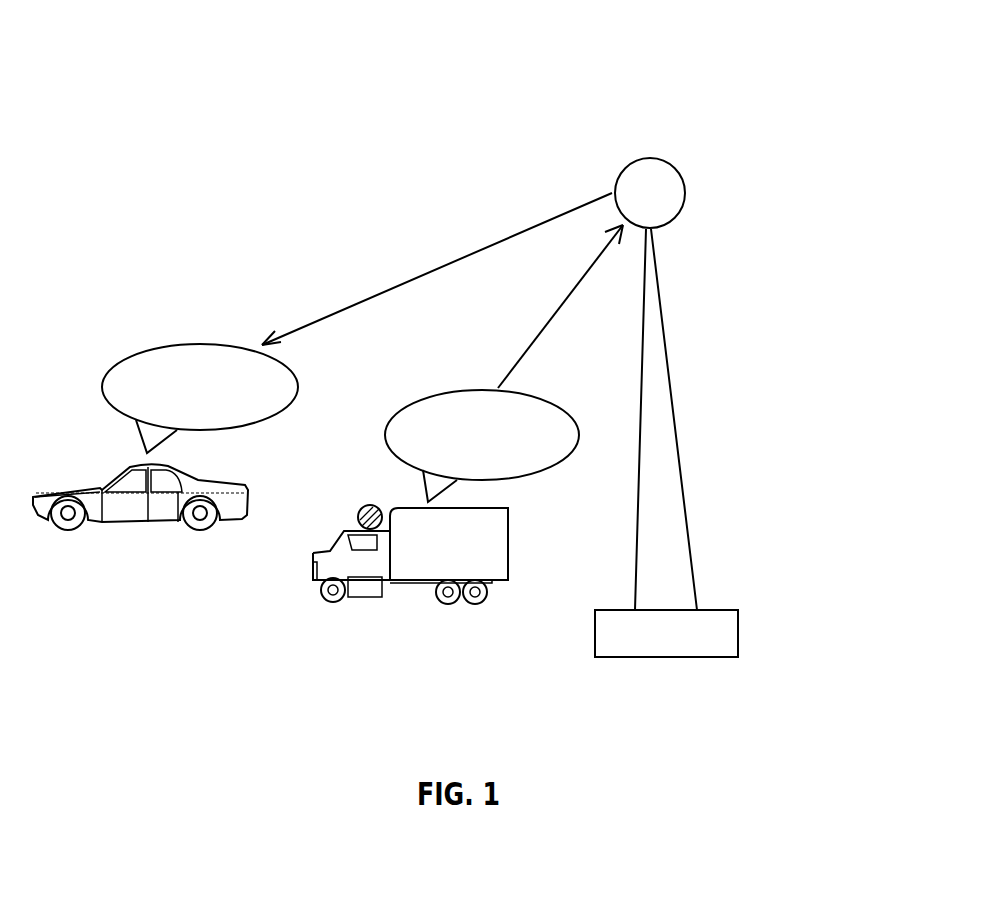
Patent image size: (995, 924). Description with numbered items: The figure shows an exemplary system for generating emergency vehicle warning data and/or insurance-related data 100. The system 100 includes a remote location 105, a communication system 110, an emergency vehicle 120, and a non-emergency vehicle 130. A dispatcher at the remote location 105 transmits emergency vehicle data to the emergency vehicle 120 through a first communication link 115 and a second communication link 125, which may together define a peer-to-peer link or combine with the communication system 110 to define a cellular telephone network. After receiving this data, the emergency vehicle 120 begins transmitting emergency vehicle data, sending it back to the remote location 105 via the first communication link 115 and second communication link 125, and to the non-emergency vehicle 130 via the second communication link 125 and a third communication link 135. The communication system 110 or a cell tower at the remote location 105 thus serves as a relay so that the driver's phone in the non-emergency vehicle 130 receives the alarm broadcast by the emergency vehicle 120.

The system for generating emergency vehicle warning data 100 is at (320, 64).
The remote location 105 is at (672, 637).
The communication system 110 is at (632, 158).
The first communication link 115 is at (682, 478).
The emergency vehicle 120 is at (407, 572).
The second communication link 125 is at (540, 332).
The non-emergency vehicle 130 is at (153, 523).
The third communication link 135 is at (427, 275).